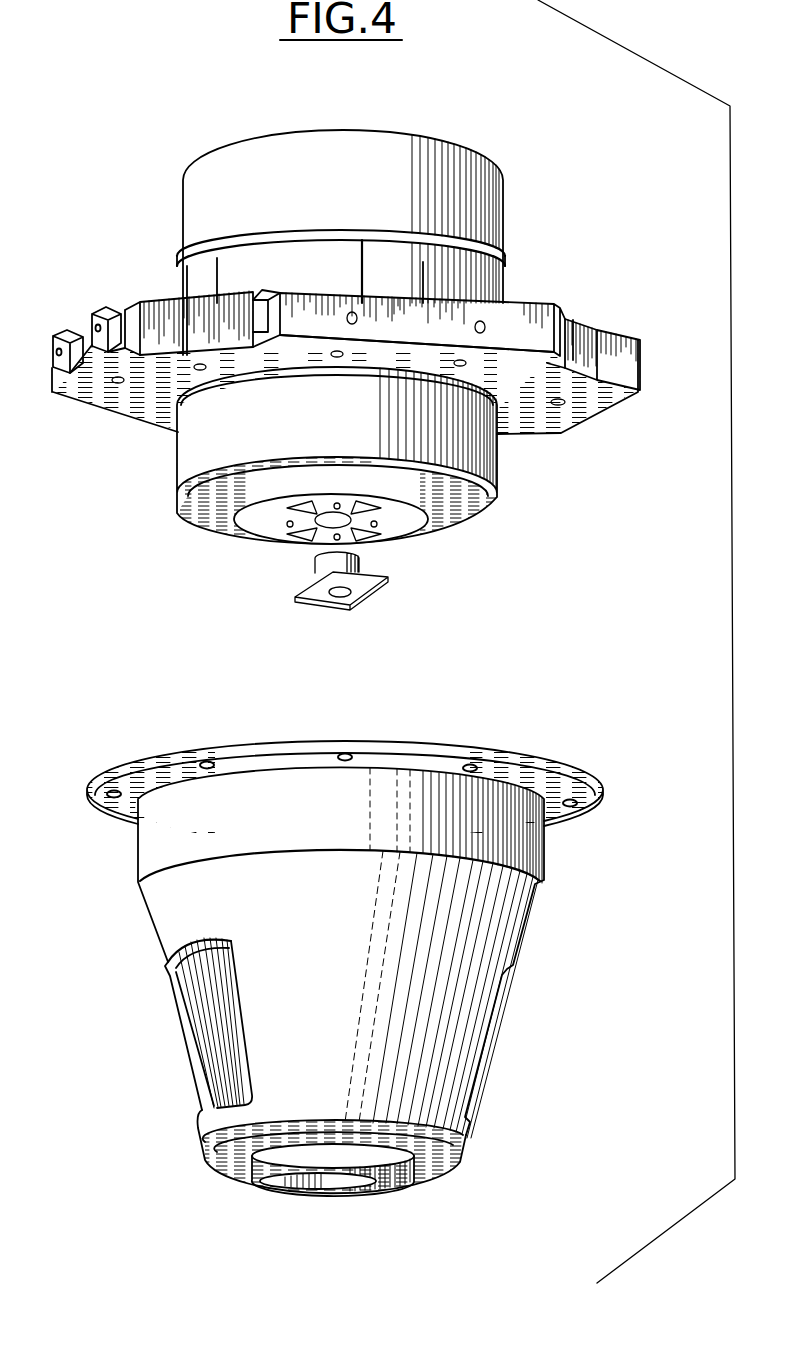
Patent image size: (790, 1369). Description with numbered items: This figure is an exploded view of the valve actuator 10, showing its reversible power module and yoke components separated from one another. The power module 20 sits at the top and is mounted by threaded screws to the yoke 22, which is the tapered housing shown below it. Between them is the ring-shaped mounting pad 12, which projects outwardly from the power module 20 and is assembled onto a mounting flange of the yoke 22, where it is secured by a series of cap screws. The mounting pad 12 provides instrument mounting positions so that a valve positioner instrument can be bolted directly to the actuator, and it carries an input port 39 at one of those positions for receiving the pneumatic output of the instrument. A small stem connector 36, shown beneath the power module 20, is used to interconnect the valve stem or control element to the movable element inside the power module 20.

The valve actuator 10 is at (191, 113).
The mounting pad 12 is at (95, 330).
The power module assembly 20 is at (504, 174).
The yoke 22 is at (510, 922).
The stem connector 36 is at (365, 588).
The input port 39 is at (586, 414).